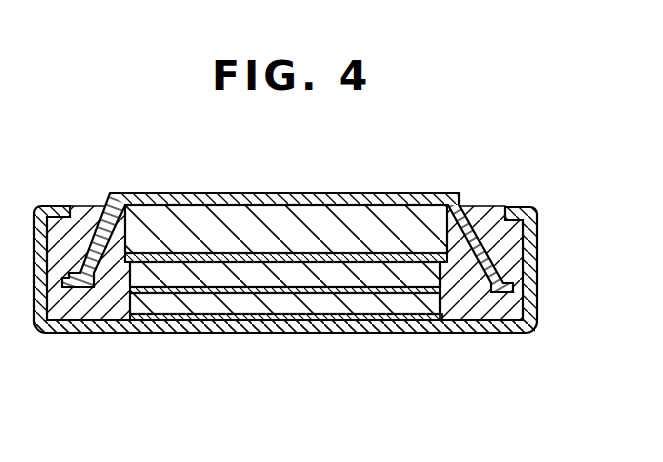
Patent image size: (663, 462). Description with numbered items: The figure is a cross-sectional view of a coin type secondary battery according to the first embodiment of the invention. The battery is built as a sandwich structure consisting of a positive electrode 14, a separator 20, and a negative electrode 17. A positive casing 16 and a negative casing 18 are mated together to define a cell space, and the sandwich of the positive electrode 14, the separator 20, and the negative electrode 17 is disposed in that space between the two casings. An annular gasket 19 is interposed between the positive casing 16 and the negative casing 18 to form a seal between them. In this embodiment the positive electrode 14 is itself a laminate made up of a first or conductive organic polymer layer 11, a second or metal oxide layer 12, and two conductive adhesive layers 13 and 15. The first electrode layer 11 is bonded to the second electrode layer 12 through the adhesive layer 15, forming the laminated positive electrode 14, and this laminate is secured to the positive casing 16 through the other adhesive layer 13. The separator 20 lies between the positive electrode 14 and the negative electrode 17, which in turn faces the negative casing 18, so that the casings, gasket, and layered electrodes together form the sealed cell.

The conductive organic polymer layer 11 is at (197, 305).
The metal oxide layer 12 is at (352, 277).
The conductive adhesive layer 13 is at (240, 323).
The positive electrode 14 is at (108, 318).
The conductive adhesive layer 15 is at (360, 295).
The positive casing 16 is at (310, 325).
The negative electrode 17 is at (255, 215).
The negative casing 18 is at (175, 197).
The annular gasket 19 is at (503, 243).
The separator 20 is at (418, 318).